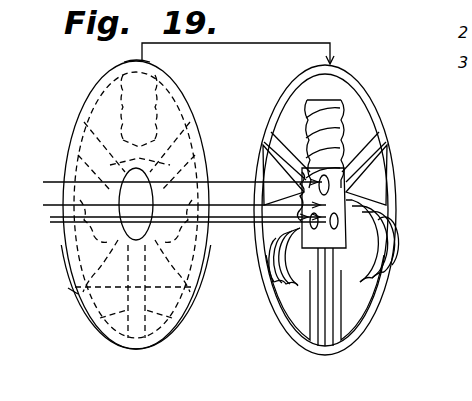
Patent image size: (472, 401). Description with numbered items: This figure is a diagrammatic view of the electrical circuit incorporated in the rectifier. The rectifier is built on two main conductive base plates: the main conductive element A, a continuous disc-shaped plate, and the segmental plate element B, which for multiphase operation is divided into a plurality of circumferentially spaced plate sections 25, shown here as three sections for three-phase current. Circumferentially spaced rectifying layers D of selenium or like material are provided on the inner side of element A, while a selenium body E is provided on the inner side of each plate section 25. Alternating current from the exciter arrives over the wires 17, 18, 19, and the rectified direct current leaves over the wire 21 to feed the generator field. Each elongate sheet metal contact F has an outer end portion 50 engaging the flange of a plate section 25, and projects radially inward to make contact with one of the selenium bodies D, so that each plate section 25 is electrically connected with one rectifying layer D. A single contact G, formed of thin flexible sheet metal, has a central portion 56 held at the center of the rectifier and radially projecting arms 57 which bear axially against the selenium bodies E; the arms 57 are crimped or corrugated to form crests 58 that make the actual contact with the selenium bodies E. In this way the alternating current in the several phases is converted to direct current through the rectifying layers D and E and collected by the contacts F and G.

The main conductive element A is at (96, 90).
The segmental plate element B is at (388, 113).
The rectifying layers D is at (105, 114).
The selenium body E is at (356, 123).
The contact F is at (160, 62).
The single contact G is at (368, 232).
The wire 17 is at (48, 182).
The wire 18 is at (52, 218).
The wire 19 is at (58, 225).
The wire 21 is at (54, 202).
The plate section 25 is at (254, 166).
The outer end portion 50 is at (128, 62).
The central portion 56 is at (331, 197).
The radially projecting arms 57 is at (328, 96).
The crests 58 is at (308, 120).